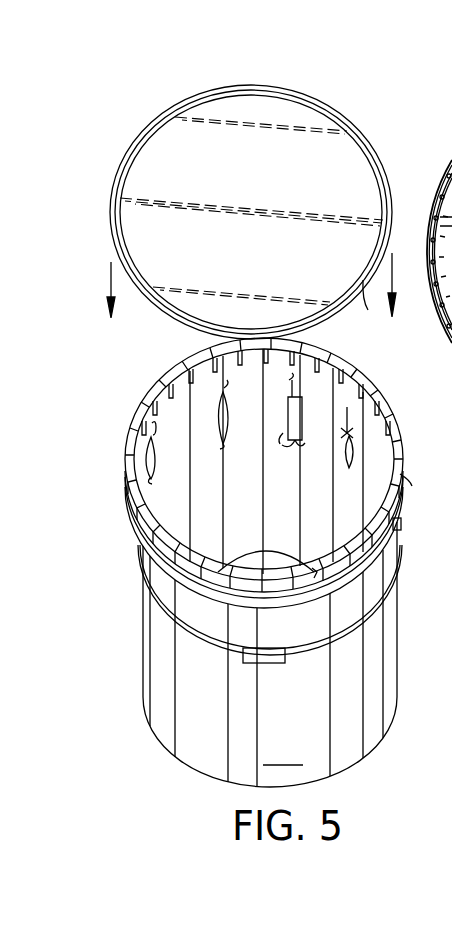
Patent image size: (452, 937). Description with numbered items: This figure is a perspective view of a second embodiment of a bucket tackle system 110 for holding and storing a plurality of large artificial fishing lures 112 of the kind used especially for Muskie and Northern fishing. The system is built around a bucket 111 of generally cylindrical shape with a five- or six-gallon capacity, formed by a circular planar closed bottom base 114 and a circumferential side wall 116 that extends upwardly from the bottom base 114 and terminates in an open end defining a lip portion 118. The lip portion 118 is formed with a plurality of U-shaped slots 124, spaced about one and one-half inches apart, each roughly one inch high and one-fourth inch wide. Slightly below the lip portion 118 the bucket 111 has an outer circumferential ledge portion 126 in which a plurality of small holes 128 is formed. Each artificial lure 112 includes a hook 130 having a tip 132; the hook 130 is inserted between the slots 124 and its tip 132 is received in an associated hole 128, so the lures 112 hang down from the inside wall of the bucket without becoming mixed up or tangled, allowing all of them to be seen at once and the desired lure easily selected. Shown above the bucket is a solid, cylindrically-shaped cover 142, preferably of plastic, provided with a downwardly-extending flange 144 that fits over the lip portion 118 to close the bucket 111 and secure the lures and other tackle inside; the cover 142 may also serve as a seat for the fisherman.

The bucket tackle system 110 is at (263, 582).
The bucket 111 is at (134, 613).
The artificial fishing lures 112 is at (303, 413).
The bottom base 114 is at (189, 760).
The side wall 116 is at (283, 749).
The lip portion 118 is at (377, 403).
The U-shaped slots 124 is at (170, 387).
The ledge portion 126 is at (178, 633).
The holes 128 is at (257, 664).
The hook 130 is at (397, 455).
The tip 132 is at (420, 490).
The cover 142 is at (348, 132).
The flange 144 is at (366, 306).